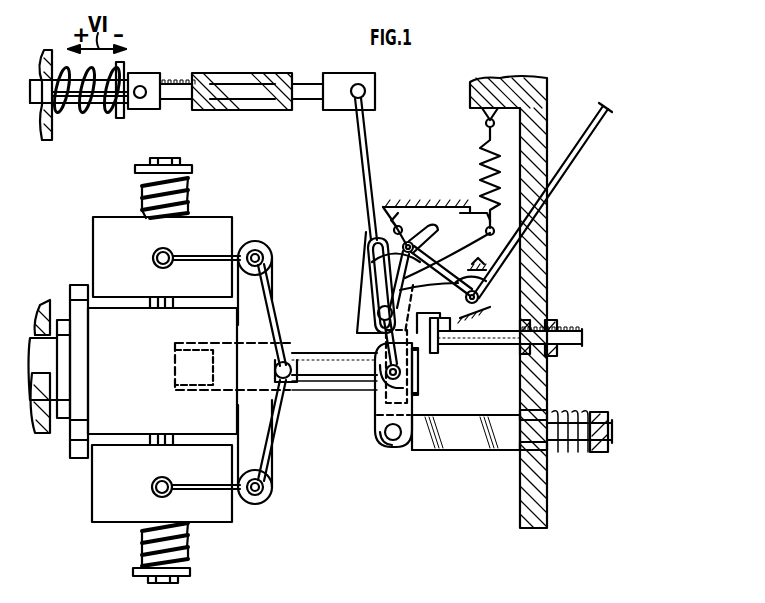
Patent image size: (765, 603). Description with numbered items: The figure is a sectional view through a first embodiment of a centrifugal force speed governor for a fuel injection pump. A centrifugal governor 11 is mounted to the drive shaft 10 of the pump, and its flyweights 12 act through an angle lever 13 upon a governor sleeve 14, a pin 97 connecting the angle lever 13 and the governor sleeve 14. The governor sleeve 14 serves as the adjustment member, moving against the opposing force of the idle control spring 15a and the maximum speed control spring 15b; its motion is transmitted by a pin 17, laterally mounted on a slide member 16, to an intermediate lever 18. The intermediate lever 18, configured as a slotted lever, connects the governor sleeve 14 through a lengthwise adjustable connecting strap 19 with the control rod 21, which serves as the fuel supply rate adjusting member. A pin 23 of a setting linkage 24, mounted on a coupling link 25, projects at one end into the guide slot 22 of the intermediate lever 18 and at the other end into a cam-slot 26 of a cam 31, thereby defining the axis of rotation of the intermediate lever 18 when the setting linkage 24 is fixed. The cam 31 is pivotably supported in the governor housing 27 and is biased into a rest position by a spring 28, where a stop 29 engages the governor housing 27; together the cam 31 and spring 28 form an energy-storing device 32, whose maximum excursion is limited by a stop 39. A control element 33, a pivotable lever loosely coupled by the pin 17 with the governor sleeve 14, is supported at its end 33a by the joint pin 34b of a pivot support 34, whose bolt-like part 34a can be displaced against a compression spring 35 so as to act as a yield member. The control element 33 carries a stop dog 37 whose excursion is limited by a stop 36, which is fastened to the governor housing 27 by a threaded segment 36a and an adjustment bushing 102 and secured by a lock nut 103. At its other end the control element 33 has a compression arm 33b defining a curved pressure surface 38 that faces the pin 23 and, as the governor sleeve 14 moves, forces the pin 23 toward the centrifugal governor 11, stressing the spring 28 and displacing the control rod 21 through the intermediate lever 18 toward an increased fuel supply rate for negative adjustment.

The drive shaft 10 is at (54, 371).
The centrifugal governor 11 is at (81, 220).
The flyweights 12 is at (108, 252).
The angle lever 13 is at (272, 266).
The governor sleeve 14 is at (317, 380).
The idle control spring 15a is at (188, 182).
The maximum speed control spring 15b is at (183, 194).
The slide member 16 is at (398, 383).
The pin 17 is at (385, 372).
The intermediate lever 18 is at (360, 146).
The connecting strap 19 is at (256, 78).
The control rod 21 is at (93, 104).
The guide slot 22 is at (392, 280).
The pin 23 is at (378, 314).
The setting linkage 24 is at (488, 285).
The coupling link 25 is at (394, 289).
The cam-slot 26 is at (430, 215).
The governor housing 27 is at (538, 107).
The spring 28 is at (487, 138).
The stop 29 is at (462, 216).
The cam 31 is at (469, 242).
The energy-storing device 32 is at (435, 210).
The control element 33 is at (376, 408).
The end 33a is at (384, 442).
The compression arm 33b is at (478, 297).
The pivot support 34 is at (421, 450).
The bolt-like part 34a is at (470, 437).
The joint pin 34b is at (397, 440).
The compression spring 35 is at (574, 450).
The stop 36 is at (436, 350).
The threaded segment 36a is at (578, 329).
The stop dog 37 is at (472, 337).
The curved pressure surface 38 is at (393, 270).
The stop 39 is at (543, 241).
The pin 97 is at (290, 358).
The adjustment bushing 102 is at (560, 350).
The lock nut 103 is at (554, 320).